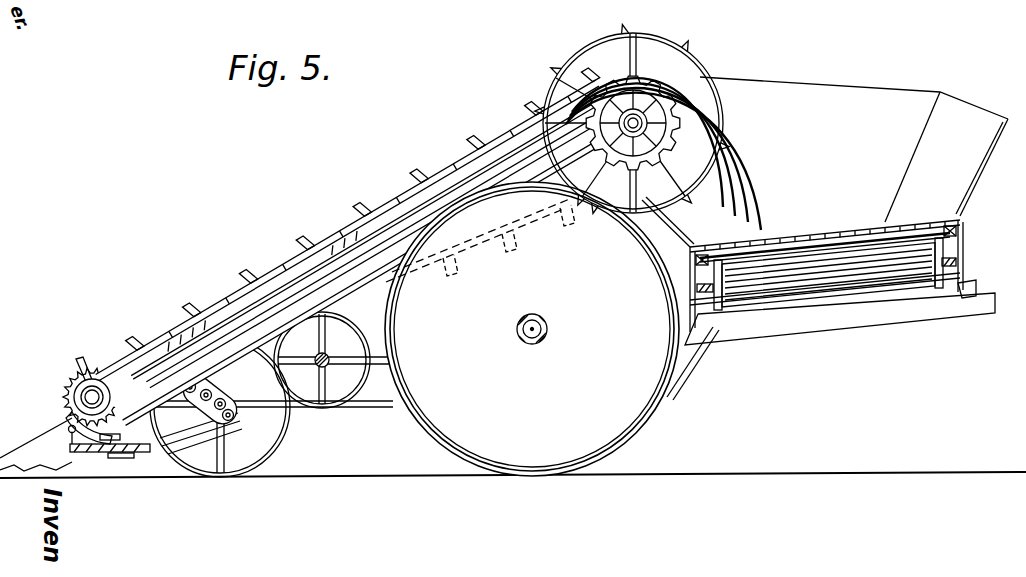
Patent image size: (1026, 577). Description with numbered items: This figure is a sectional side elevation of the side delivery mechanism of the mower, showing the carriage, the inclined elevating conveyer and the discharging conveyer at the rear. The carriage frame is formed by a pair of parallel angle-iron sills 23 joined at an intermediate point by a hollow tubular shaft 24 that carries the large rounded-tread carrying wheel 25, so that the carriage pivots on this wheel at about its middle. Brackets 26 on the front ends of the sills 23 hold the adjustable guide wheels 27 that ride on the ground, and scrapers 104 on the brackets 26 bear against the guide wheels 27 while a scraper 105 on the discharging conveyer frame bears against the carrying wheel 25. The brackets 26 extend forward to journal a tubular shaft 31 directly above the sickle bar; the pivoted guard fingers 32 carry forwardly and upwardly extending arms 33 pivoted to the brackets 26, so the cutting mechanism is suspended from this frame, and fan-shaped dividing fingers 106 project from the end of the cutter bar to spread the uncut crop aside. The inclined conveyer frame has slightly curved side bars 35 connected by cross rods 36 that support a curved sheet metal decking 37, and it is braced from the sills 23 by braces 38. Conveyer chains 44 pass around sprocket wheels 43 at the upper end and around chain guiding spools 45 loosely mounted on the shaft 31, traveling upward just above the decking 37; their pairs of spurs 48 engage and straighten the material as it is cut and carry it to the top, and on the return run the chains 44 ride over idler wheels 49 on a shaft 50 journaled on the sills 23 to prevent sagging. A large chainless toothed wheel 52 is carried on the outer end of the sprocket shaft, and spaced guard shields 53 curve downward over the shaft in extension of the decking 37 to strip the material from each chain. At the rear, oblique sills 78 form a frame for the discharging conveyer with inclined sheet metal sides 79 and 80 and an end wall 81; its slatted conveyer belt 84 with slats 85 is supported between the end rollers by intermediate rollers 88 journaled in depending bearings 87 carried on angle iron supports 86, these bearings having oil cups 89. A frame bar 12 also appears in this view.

The frame bar 12 is at (82, 446).
The sills 23 is at (436, 354).
The shaft 24 is at (548, 328).
The carrying wheel 25 is at (618, 425).
The brackets 26 is at (236, 394).
The guide wheels 27 is at (276, 444).
The tubular shaft 31 is at (72, 398).
The guard fingers 32 is at (50, 452).
The arms 33 is at (114, 434).
The side bars 35 is at (487, 192).
The cross rods 36 is at (358, 264).
The decking 37 is at (372, 263).
The braces 38 is at (321, 344).
The sprocket wheels 43 is at (612, 160).
The conveyer chains 44 is at (358, 202).
The chain guiding spools 45 is at (78, 371).
The spurs 48 is at (354, 243).
The idler wheels 49 is at (350, 330).
The shaft 50 is at (324, 354).
The toothed wheel 52 is at (667, 41).
The guard shields 53 is at (748, 180).
The sills 78 is at (976, 287).
The side 79 is at (680, 238).
The side 80 is at (976, 172).
The end wall 81 is at (829, 85).
The conveyer belt 84 is at (855, 238).
The slats 85 is at (913, 226).
The angle iron supports 86 is at (689, 270).
The journal bearings 87 is at (722, 316).
The intermediate rollers 88 is at (786, 307).
The oil cups 89 is at (694, 256).
The scrapers 104 is at (302, 409).
The scraper 105 is at (695, 358).
The dividing fingers 106 is at (180, 436).